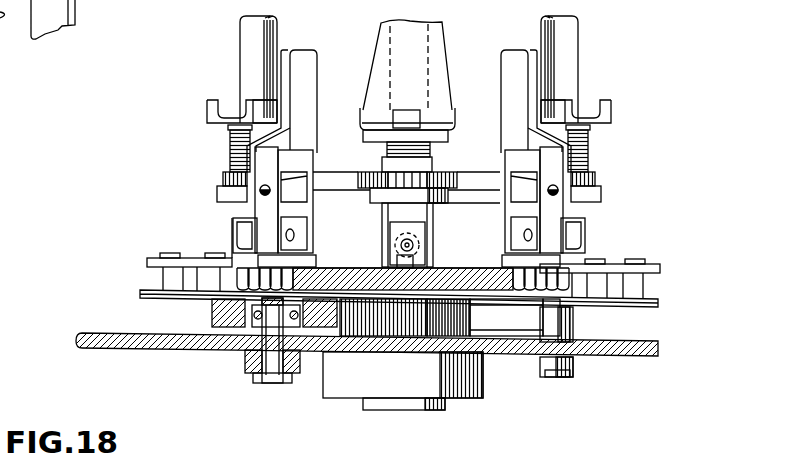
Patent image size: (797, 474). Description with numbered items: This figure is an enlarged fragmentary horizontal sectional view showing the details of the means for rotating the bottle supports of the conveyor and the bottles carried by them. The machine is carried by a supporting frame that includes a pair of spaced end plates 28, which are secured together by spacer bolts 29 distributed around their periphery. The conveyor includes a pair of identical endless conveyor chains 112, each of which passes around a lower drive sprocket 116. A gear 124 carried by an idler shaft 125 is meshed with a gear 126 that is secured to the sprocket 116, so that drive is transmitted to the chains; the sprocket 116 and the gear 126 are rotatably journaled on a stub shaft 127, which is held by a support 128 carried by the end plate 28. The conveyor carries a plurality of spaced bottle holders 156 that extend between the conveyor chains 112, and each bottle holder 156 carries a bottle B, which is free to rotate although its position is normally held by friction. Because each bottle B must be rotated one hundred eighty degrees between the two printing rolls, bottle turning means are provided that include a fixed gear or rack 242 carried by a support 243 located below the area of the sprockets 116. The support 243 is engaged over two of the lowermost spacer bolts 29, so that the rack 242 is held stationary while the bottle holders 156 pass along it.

The spacer bolts 29 is at (257, 36).
The bottle holder 156 is at (222, 153).
The bottle B is at (447, 52).
The support 243 is at (322, 180).
The fixed gear or rack 242 is at (356, 189).
The lower drive sprocket 116 is at (463, 280).
The gear 124 is at (209, 309).
The idler shaft 125 is at (279, 383).
The gear 126 is at (472, 319).
The end plate 28 is at (624, 355).
The support 128 is at (473, 378).
The stub shaft 127 is at (428, 411).
The conveyor chain 112 is at (633, 272).